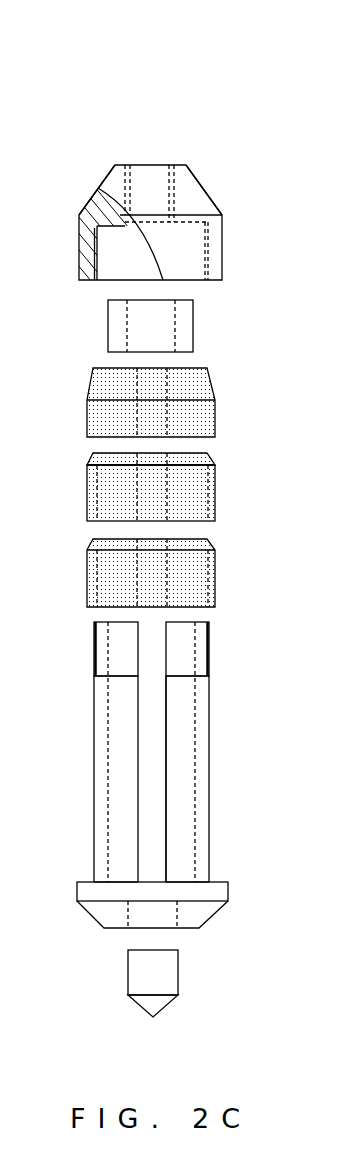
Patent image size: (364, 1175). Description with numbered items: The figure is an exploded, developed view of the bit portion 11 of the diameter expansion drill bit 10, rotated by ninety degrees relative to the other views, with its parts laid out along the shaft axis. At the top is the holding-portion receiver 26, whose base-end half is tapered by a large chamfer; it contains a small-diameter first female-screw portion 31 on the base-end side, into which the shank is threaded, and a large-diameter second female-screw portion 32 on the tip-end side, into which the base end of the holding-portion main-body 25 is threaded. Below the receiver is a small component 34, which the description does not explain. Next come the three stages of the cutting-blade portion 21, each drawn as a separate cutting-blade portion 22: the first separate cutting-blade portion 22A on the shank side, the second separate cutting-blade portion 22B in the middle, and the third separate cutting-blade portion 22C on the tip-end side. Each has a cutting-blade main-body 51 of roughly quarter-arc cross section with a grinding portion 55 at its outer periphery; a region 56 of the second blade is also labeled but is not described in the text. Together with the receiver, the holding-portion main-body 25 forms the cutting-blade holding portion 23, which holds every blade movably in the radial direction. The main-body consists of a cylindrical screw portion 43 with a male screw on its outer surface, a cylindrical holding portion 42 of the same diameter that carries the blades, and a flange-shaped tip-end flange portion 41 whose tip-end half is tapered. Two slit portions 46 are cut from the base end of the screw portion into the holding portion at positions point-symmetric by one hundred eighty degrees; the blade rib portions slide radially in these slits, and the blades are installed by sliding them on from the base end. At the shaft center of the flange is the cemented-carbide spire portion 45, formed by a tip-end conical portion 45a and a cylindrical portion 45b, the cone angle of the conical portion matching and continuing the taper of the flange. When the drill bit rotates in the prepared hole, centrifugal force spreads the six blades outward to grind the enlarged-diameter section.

The diameter expansion drill bit 10 is at (151, 80).
The bit portion 11 is at (221, 128).
The cutting-blade portion 21 is at (20, 426).
The separate cutting-blade portion 22 is at (151, 493).
The first separate cutting-blade portion 22A is at (215, 410).
The second separate cutting-blade portion 22B is at (215, 497).
The third separate cutting-blade portion 22C is at (215, 583).
The cutting-blade holding portion 23 is at (76, 968).
The holding-portion main-body 25 is at (222, 774).
The holding-portion receiver 26 is at (214, 191).
The first female-screw portion 31 is at (165, 168).
The second female-screw portion 32 is at (106, 254).
The spacer block 34 is at (193, 331).
The tip-end flange portion 41 is at (92, 915).
The cylindrical holding portion 42 is at (94, 746).
The cylindrical screw portion 43 is at (94, 650).
The spire portion 45 is at (239, 960).
The tip-end conical portion 45a is at (160, 1008).
The cylindrical portion 45b is at (178, 975).
The slit portion 46 is at (164, 705).
The cutting-blade main-body 51 is at (103, 491).
The grinding portion 55 is at (86, 466).
The chamfered surface 56 is at (91, 452).